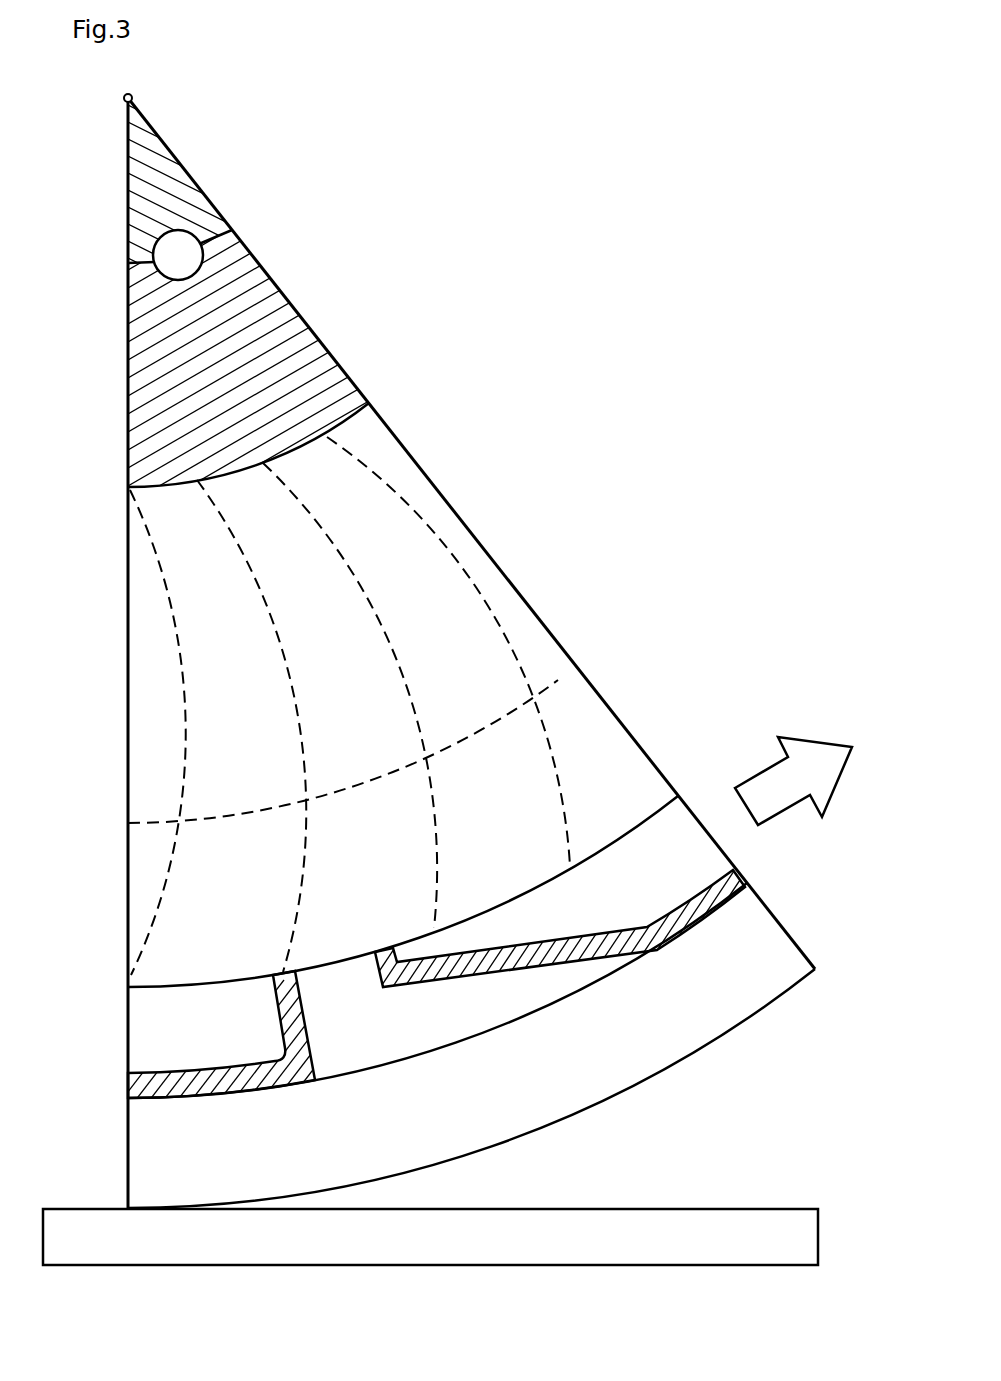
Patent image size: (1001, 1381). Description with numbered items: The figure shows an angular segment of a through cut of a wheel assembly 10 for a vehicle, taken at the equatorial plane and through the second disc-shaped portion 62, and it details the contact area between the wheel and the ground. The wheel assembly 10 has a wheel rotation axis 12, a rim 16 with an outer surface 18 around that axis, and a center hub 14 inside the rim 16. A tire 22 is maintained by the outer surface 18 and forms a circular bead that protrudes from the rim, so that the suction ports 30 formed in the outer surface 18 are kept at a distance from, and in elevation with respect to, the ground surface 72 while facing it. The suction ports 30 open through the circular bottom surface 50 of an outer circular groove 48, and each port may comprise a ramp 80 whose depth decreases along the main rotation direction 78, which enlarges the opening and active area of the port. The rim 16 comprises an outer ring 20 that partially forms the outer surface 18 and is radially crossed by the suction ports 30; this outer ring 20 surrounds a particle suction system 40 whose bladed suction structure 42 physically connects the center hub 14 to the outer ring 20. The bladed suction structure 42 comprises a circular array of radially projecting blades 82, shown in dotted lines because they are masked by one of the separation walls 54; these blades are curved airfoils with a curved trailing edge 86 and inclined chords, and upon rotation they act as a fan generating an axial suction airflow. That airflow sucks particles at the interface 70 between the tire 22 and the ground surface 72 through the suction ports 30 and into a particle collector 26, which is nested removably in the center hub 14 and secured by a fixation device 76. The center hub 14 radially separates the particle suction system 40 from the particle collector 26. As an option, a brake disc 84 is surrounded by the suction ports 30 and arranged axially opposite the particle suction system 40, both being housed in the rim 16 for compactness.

The wheel assembly 10 is at (597, 191).
The wheel rotation axis 12 is at (133, 98).
The center hub 14 is at (305, 325).
The rim 16 is at (178, 1040).
The outer surface 18 is at (728, 903).
The outer ring 20 is at (132, 1089).
The tire 22 is at (372, 1130).
The particle collector 26 is at (188, 168).
The suction ports 30 is at (325, 998).
The particle suction system 40 is at (604, 428).
The bladed suction structure 42 is at (560, 585).
The outer circular groove 48 is at (725, 986).
The circular bottom surface 50 is at (180, 1100).
The separation walls 54 is at (466, 480).
The second disc-shaped portion 62 is at (350, 879).
The interface 70 is at (455, 1201).
The ground surface 72 is at (780, 1207).
The fixation device 76 is at (163, 268).
The main rotation direction 78 is at (772, 796).
The ramp 80 is at (507, 973).
The radially projecting blades 82 is at (135, 733).
The brake disc 84 is at (556, 675).
The curved trailing edge 86 is at (225, 537).